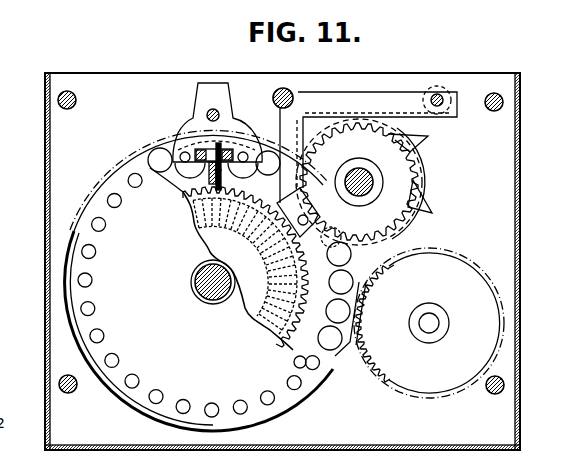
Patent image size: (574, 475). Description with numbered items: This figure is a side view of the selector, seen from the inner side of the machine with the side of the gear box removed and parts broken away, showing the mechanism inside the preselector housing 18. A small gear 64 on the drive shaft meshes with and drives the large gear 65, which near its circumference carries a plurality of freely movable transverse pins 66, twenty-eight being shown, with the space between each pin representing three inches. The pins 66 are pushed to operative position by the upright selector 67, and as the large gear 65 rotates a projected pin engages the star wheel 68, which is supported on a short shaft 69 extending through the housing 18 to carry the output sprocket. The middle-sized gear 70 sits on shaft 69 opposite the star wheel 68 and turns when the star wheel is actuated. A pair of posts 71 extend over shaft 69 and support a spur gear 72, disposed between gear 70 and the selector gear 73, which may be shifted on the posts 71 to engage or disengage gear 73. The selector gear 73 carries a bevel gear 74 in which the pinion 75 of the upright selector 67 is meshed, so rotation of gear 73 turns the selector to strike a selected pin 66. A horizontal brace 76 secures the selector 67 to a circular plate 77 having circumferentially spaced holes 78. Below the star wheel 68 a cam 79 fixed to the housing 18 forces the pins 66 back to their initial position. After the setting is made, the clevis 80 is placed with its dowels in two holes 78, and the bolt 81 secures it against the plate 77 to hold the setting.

The preselector mechanism housing 18 is at (46, 120).
The small gear 64 is at (394, 379).
The large gear 65 is at (336, 353).
The pins 66 is at (160, 150).
The upright selector 67 is at (229, 143).
The star wheel 68 is at (416, 136).
The short shaft 69 is at (369, 187).
The middle-sized gear 70 is at (402, 177).
The posts 71 is at (298, 97).
The spur gear 72 is at (324, 221).
The selector gear 73 is at (273, 262).
The bevel gear 74 is at (233, 253).
The pinion 75 is at (196, 241).
The horizontal brace 76 is at (215, 176).
The circular plate 77 is at (199, 280).
The holes 78 is at (157, 389).
The cam 79 is at (361, 283).
The clevis 80 is at (199, 98).
The bolt 81 is at (218, 112).